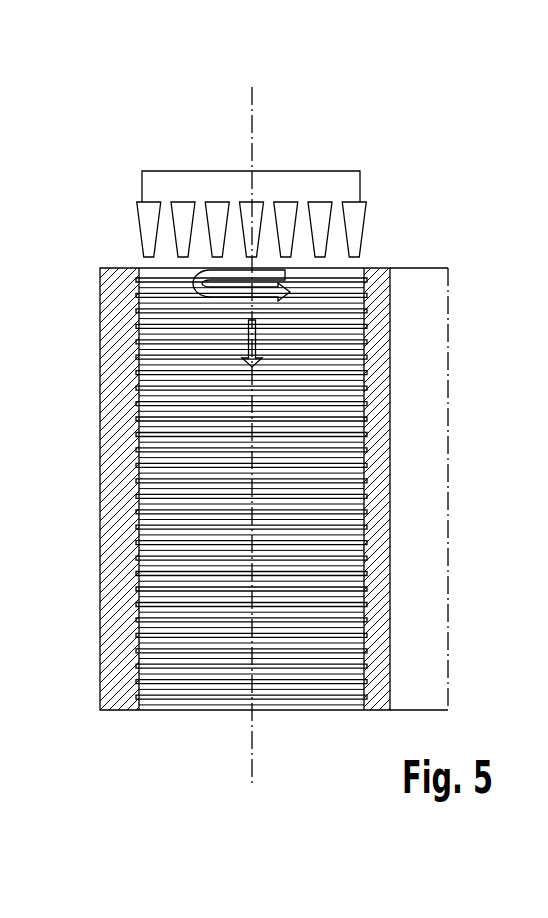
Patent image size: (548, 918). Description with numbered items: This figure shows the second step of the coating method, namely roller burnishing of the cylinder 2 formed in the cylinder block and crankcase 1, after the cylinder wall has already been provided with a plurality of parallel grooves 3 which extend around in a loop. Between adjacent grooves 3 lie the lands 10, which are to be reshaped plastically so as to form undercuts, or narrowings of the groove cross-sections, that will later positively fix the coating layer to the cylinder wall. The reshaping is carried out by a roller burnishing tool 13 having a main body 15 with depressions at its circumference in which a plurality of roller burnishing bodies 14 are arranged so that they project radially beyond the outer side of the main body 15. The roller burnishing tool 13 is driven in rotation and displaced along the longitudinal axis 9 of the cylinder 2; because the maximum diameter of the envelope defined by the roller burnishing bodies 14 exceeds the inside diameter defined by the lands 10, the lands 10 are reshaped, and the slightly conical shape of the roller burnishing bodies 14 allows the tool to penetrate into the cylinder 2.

The cylinder block and crankcase 1 is at (118, 304).
The cylinder 2 is at (153, 273).
The grooves 3 is at (388, 270).
The longitudinal axis 9 is at (253, 100).
The lands 10 is at (363, 287).
The roller burnishing tool 13 is at (292, 174).
The roller burnishing bodies 14 is at (220, 215).
The main body 15 is at (353, 176).